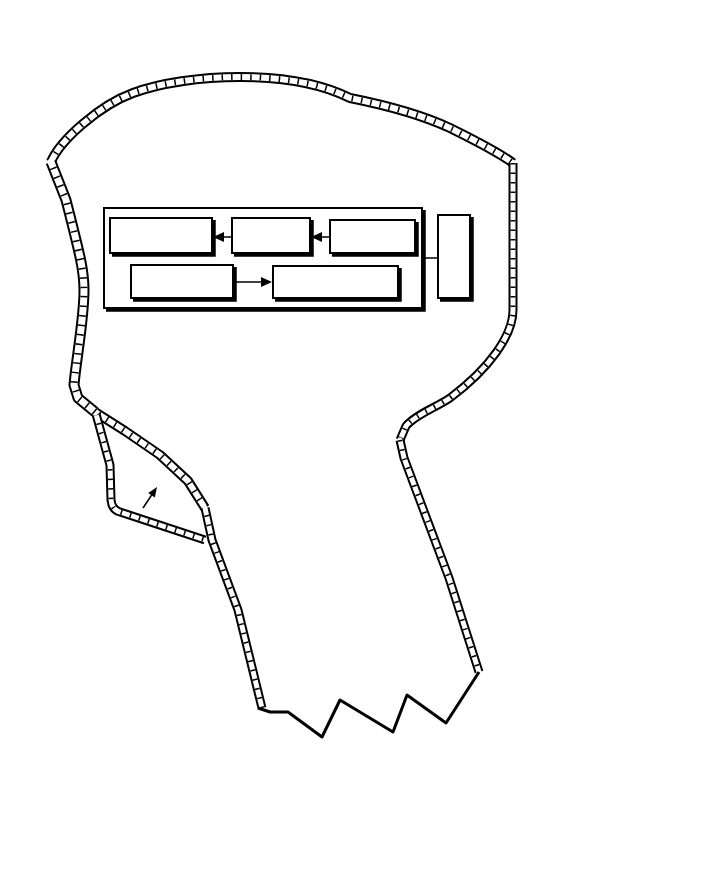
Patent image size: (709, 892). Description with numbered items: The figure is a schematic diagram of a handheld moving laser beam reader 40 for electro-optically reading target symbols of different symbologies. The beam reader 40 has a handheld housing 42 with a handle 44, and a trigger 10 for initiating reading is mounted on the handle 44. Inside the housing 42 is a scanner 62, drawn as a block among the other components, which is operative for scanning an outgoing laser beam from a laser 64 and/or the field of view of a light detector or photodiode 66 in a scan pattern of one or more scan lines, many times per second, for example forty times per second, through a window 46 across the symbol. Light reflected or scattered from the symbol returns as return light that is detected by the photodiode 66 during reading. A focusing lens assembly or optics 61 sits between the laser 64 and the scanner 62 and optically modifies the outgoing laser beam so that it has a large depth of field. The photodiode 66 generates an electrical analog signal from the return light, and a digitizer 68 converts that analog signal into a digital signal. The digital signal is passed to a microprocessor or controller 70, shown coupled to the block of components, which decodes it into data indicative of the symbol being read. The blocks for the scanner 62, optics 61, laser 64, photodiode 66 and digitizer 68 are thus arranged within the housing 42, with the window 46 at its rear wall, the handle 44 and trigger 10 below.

The trigger 10 is at (128, 535).
The moving laser beam reader 40 is at (587, 170).
The handheld housing 42 is at (519, 268).
The handle 44 is at (451, 558).
The window 46 is at (72, 256).
The optics 61 is at (270, 218).
The scanner 62 is at (160, 218).
The laser 64 is at (372, 220).
The photodiode 66 is at (180, 298).
The digitizer 68 is at (335, 298).
The microprocessor 70 is at (452, 215).